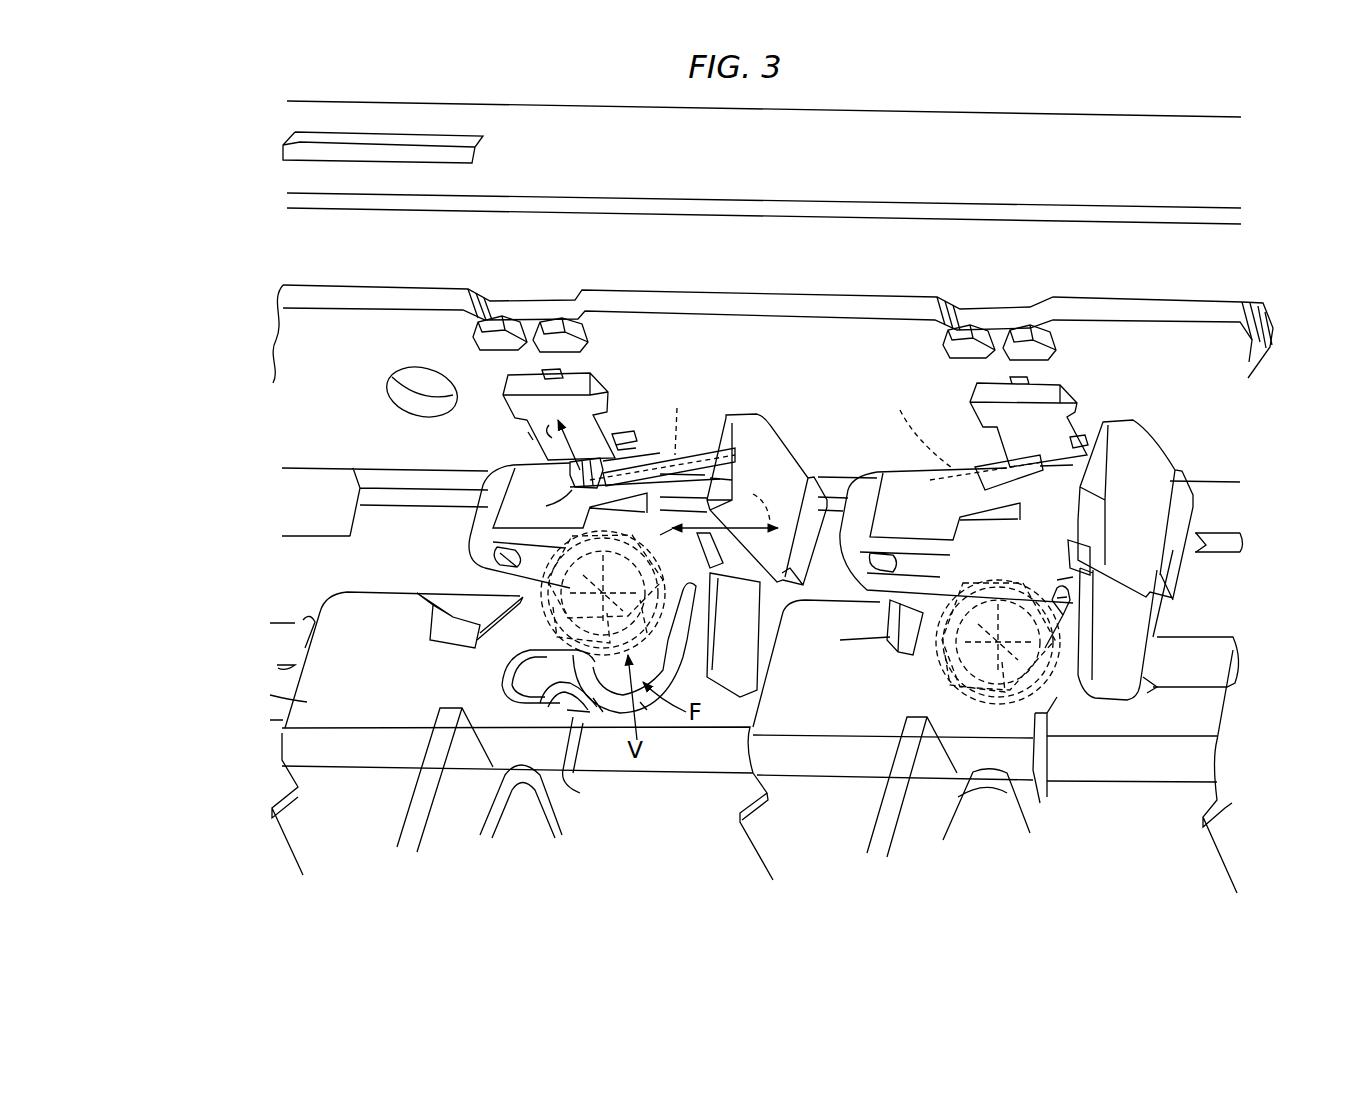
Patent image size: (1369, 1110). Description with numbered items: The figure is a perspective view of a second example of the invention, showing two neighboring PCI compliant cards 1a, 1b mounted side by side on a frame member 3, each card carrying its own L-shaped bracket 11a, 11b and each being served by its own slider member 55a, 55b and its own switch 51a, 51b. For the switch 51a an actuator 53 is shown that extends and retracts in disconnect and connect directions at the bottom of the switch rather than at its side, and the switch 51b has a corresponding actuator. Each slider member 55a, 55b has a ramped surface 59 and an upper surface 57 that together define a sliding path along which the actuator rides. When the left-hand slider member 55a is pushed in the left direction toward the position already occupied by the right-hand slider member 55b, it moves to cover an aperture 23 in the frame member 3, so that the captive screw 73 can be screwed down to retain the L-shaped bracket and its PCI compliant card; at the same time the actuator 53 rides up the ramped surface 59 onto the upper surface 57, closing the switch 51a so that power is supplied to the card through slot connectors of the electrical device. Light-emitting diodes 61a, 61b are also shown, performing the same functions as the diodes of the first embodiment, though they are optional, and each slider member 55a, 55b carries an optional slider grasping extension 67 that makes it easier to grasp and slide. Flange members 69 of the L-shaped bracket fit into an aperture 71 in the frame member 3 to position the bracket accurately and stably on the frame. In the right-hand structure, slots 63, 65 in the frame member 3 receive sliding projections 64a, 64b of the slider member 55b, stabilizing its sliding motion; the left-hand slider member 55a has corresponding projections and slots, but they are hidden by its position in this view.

The PCI compliant card 1a is at (393, 827).
The PCI compliant card 1b is at (865, 833).
The frame member 3 is at (292, 570).
The L-shaped bracket 11a is at (295, 700).
The L-shaped bracket 11b is at (1033, 805).
The aperture 23 is at (575, 700).
The switch 51a is at (600, 392).
The switch 51b is at (1075, 402).
The actuator 53 is at (572, 474).
The slider member 55a is at (882, 522).
The slider member 55b is at (1102, 512).
The upper surface 57 is at (690, 455).
The ramped surface 59 is at (632, 456).
The light-emitting diode 61a is at (495, 318).
The light-emitting diode 61b is at (550, 322).
The slot 63 is at (1215, 650).
The sliding projection 64a is at (1153, 687).
The sliding projection 64b is at (1205, 540).
The slot 65 is at (1242, 535).
The slider grasping extension 67 is at (765, 433).
The flange member 69 is at (453, 600).
The aperture 71 is at (456, 638).
The captive screw 73 is at (500, 552).